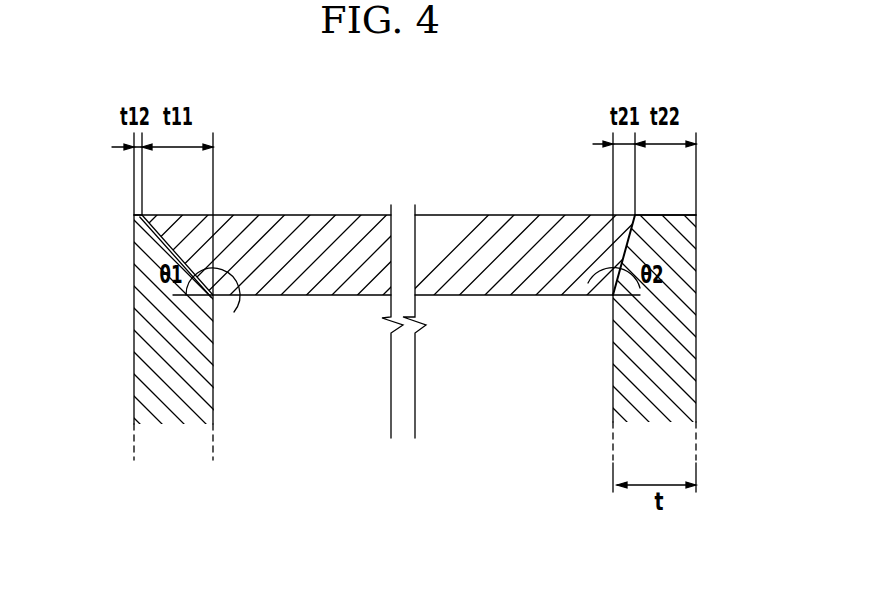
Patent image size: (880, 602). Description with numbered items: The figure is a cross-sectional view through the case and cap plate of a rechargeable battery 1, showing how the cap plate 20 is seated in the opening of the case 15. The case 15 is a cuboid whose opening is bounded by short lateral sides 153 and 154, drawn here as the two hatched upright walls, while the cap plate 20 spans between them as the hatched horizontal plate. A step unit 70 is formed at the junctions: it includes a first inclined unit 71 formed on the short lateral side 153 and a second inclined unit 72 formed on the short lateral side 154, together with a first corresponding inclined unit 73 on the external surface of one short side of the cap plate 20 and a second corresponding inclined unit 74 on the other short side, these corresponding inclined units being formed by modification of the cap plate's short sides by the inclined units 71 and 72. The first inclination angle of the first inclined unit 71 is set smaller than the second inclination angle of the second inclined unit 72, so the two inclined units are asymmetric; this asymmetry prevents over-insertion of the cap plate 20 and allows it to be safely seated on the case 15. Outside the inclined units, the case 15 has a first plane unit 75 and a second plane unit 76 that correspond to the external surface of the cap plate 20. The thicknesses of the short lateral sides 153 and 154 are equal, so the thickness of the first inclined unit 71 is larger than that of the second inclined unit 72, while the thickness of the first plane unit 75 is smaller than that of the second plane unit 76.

The display device 1 is at (391, 109).
The case 15 is at (113, 482).
The cap plate 20 is at (317, 215).
The step unit 70 is at (545, 105).
The first inclined unit 71 is at (220, 292).
The second inclined unit 72 is at (590, 296).
The first corresponding inclined unit 73 is at (160, 246).
The second corresponding inclined unit 74 is at (632, 230).
The first plane unit 75 is at (134, 215).
The second plane unit 76 is at (673, 212).
The short lateral side 153 is at (157, 349).
The short lateral side 154 is at (677, 348).